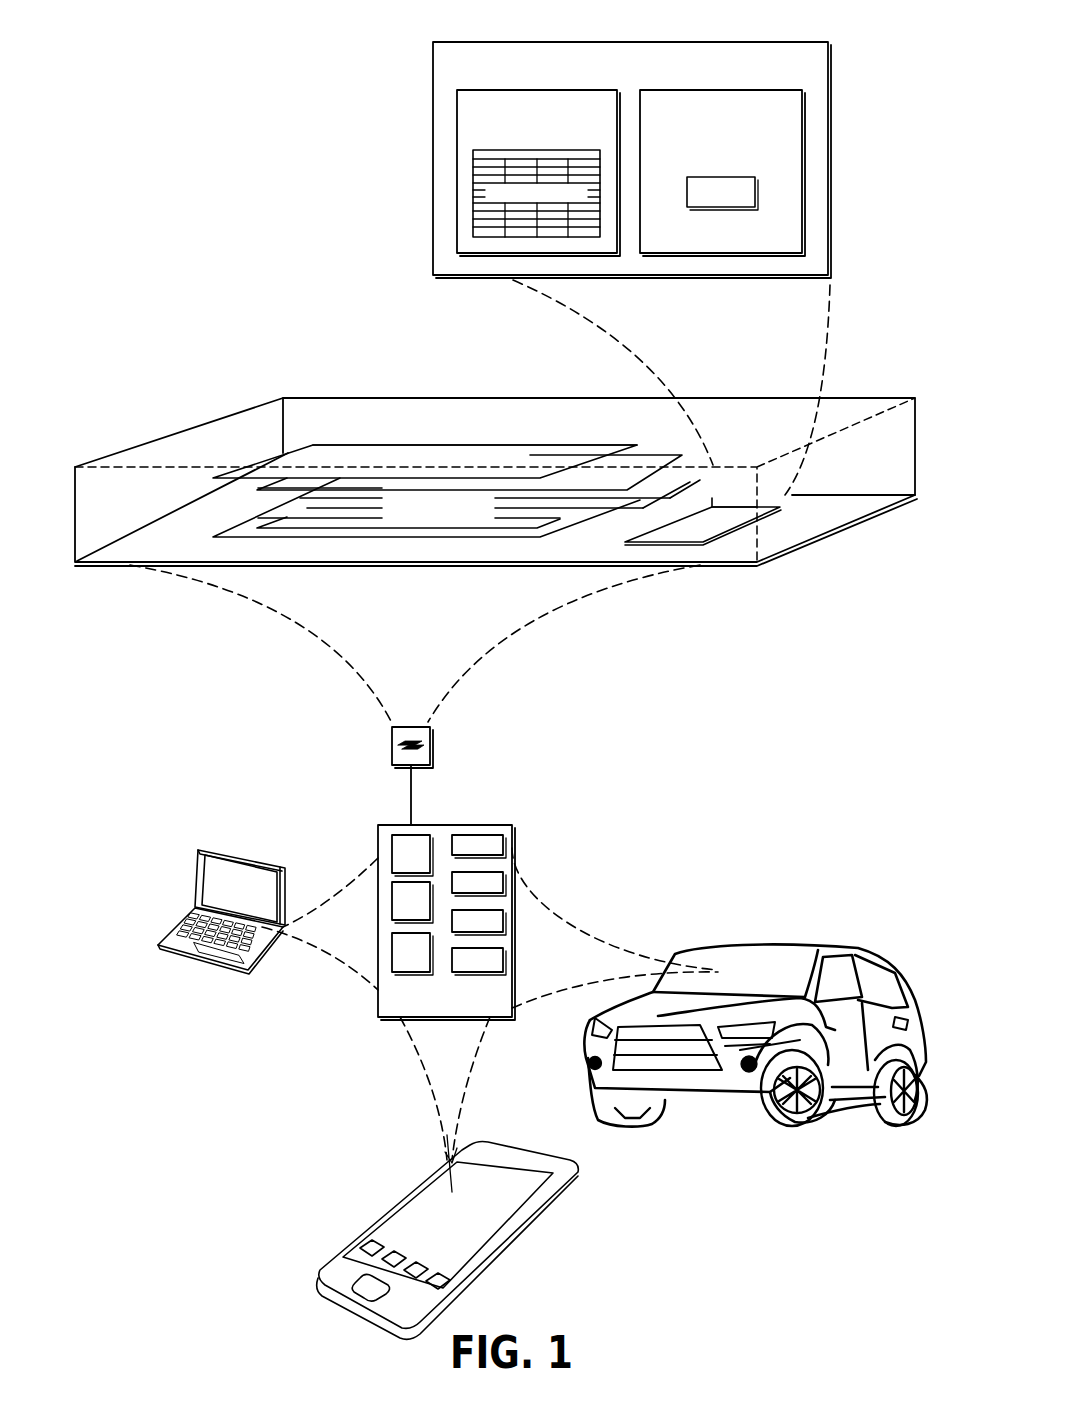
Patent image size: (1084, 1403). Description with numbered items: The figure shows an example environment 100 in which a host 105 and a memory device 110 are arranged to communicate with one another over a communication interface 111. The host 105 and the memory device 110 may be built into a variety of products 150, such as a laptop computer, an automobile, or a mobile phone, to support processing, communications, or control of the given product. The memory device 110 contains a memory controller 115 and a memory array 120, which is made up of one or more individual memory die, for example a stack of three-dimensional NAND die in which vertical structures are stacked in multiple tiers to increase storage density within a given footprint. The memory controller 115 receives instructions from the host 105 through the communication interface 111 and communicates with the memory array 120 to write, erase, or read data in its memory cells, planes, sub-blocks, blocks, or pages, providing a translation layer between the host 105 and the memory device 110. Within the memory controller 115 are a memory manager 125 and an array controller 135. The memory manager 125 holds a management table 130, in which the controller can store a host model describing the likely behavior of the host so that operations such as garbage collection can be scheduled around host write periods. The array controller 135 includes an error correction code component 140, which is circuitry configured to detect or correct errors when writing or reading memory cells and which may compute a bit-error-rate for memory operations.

The environment 100 is at (828, 20).
The host 105 is at (378, 832).
The memory device 110 is at (226, 420).
The communication interface 111 is at (411, 797).
The memory controller 115 is at (435, 44).
The memory array 120 is at (497, 445).
The memory manager 125 is at (456, 127).
The management table 130 is at (474, 188).
The array controller 135 is at (806, 127).
The error correction code (ECC) component 140 is at (758, 194).
The products 150 is at (203, 847).